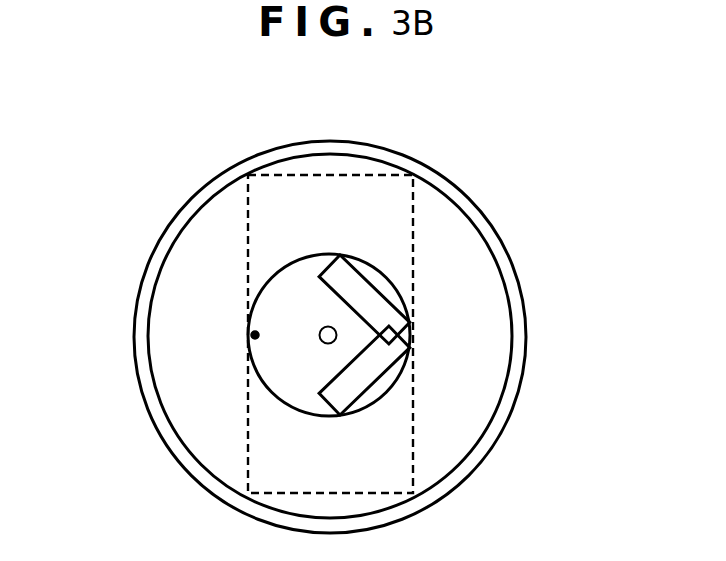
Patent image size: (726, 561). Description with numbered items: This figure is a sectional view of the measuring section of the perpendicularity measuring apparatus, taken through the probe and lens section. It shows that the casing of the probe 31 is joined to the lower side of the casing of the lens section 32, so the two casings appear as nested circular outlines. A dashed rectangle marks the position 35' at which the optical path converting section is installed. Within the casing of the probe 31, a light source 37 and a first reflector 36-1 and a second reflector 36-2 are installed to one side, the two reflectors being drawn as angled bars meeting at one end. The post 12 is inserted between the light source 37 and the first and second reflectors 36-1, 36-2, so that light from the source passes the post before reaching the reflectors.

The post 12 is at (321, 343).
The probe 31 is at (413, 330).
The lens section 32 is at (483, 460).
The position of installing optical path converting section 35' is at (408, 302).
The first reflector 36-1 is at (365, 295).
The second reflector 36-2 is at (383, 365).
The light source 37 is at (252, 335).